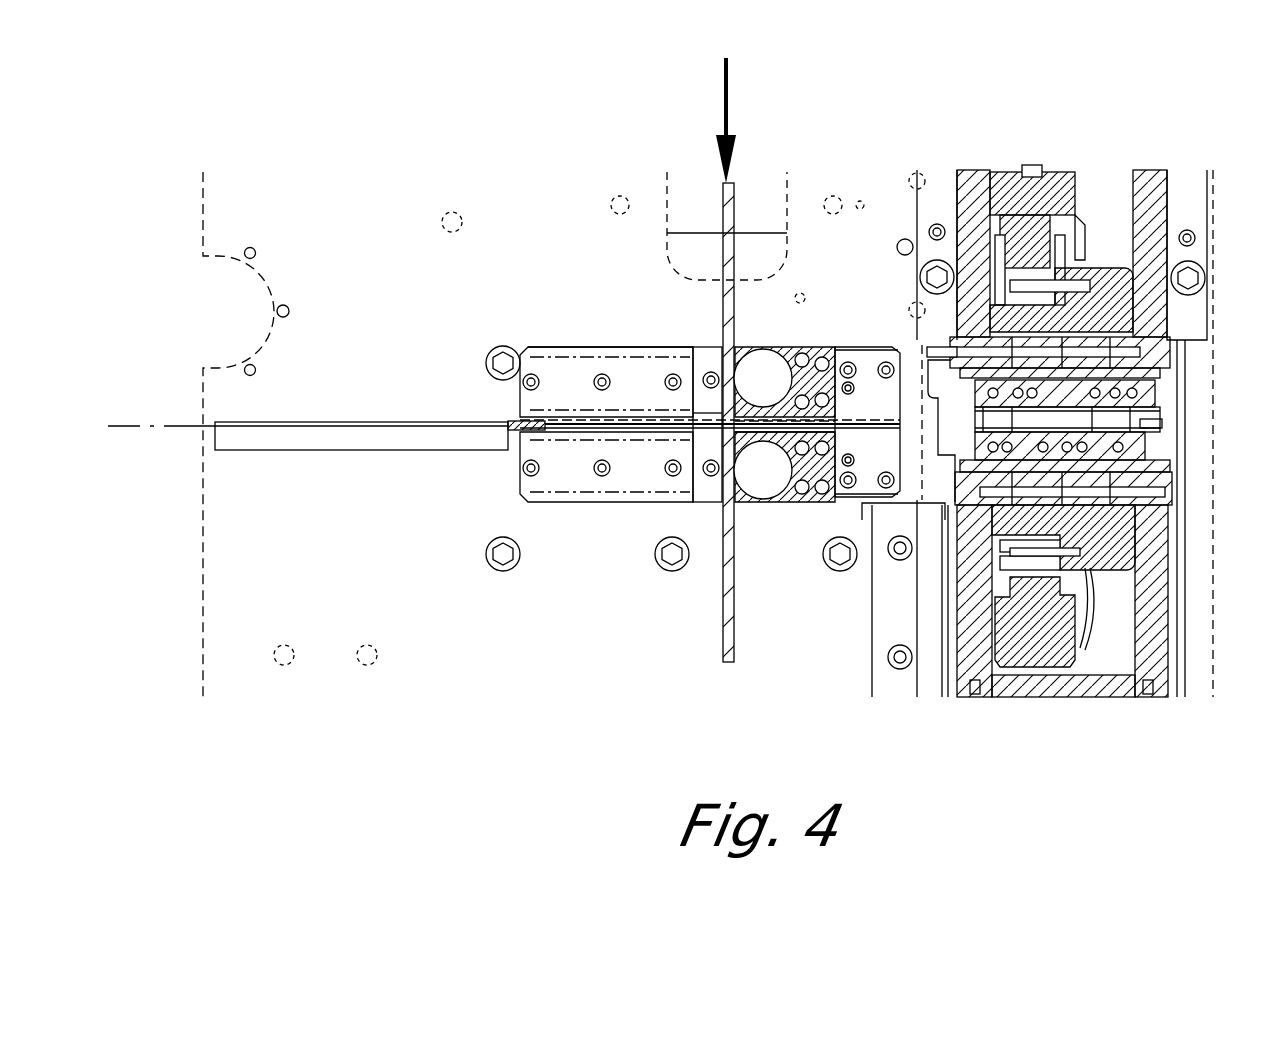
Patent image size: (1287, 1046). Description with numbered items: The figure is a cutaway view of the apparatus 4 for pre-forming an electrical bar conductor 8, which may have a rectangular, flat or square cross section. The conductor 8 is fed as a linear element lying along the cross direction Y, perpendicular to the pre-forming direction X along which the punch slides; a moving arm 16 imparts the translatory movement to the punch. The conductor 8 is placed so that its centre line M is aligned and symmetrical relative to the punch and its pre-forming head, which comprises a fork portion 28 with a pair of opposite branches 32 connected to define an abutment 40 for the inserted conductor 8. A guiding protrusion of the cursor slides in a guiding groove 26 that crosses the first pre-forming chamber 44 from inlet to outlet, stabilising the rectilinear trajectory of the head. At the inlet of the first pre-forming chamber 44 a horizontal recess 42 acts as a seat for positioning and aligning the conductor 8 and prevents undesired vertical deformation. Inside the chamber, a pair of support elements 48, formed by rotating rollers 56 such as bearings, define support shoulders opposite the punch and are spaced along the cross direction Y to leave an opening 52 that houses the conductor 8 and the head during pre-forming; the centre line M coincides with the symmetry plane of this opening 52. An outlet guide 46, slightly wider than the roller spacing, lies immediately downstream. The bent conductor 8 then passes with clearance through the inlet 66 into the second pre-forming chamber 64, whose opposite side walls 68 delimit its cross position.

The apparatus 4 is at (363, 138).
The electrical bar conductor 8 is at (742, 177).
The moving arm 16 is at (273, 440).
The guiding groove 26 is at (885, 418).
The fork portion 28 is at (514, 417).
The branches 32 is at (553, 502).
The abutment 40 is at (511, 440).
The horizontal recess 42 is at (705, 352).
The first pre-forming chamber 44 is at (664, 337).
The outlet guide 46 is at (816, 450).
The support elements 48 is at (786, 336).
The opening 52 is at (760, 430).
The rotating rollers 56 is at (762, 350).
The second pre-forming chamber 64 is at (1106, 424).
The inlet 66 is at (969, 436).
The side walls 68 is at (1115, 385).
The centre line M is at (696, 414).
The pre-forming direction X is at (122, 426).
The cross direction Y is at (738, 108).